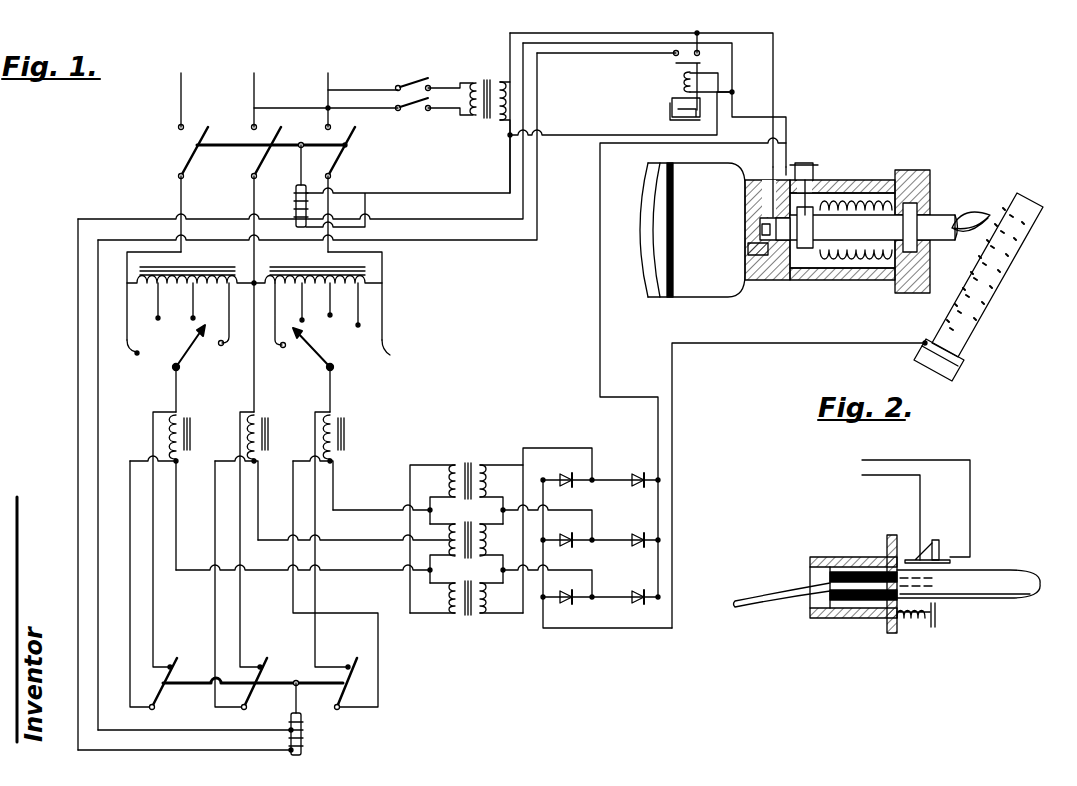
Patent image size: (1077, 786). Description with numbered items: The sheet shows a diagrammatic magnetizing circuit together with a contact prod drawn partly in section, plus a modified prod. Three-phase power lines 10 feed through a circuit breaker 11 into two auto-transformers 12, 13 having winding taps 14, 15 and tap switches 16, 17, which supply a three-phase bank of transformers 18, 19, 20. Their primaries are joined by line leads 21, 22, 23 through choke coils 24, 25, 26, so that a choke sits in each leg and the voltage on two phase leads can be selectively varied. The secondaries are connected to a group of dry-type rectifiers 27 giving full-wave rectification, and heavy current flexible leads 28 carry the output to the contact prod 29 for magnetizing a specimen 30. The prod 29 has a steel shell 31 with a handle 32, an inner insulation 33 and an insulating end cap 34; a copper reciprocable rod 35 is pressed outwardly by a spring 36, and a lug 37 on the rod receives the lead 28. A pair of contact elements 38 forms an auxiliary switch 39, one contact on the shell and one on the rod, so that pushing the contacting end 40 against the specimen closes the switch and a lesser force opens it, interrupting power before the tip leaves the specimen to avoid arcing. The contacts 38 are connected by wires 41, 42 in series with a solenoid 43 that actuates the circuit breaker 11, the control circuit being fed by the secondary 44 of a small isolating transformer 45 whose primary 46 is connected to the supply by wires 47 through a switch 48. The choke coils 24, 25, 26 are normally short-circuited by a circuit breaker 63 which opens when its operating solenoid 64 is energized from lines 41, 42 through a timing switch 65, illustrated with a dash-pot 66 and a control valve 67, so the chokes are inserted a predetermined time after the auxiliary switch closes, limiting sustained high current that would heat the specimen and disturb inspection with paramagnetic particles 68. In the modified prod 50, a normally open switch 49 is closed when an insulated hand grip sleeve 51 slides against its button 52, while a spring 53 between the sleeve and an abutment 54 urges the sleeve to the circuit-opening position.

In FIG. 1, the three-phase power lines 10 is at (340, 70).
In FIG. 1, the circuit breaker 11 is at (338, 163).
In FIG. 1, the auto-transformer 12 is at (188, 281).
In FIG. 1, the auto-transformer 13 is at (316, 268).
In FIG. 1, the winding taps 14 is at (137, 355).
In FIG. 1, the winding taps 15 is at (390, 355).
In FIG. 1, the tap switch 16 is at (180, 370).
In FIG. 1, the tap switch 17 is at (335, 370).
In FIG. 1, the transformer 18 is at (447, 481).
In FIG. 1, the transformer 19 is at (447, 541).
In FIG. 1, the transformer 20 is at (447, 600).
In FIG. 1, the line lead 21 is at (380, 541).
In FIG. 1, the line lead 22 is at (372, 503).
In FIG. 1, the line lead 23 is at (378, 570).
In FIG. 1, the choke coil 24 is at (271, 430).
In FIG. 1, the choke coil 25 is at (192, 428).
In FIG. 1, the choke coil 26 is at (348, 427).
In FIG. 1, the rectifiers 27 is at (612, 480).
In FIG. 1, the flexible leads 28 is at (673, 380).
In FIG. 2, the flexible leads 28 is at (773, 592).
In FIG. 1, the contact prod 29 is at (872, 182).
In FIG. 1, the specimen 30 is at (970, 343).
In FIG. 1, the steel shell 31 is at (843, 282).
In FIG. 1, the handle 32 is at (705, 170).
In FIG. 1, the insulation 33 is at (840, 183).
In FIG. 1, the end cap 34 is at (921, 172).
In FIG. 1, the reciprocable rod 35 is at (940, 242).
In FIG. 1, the spring 36 is at (870, 282).
In FIG. 1, the lug 37 is at (807, 163).
In FIG. 1, the contact elements 38 is at (790, 282).
In FIG. 1, the auxiliary switch 39 is at (772, 282).
In FIG. 1, the contacting end 40 is at (985, 214).
In FIG. 1, the wire 41 is at (776, 53).
In FIG. 2, the wire 41 is at (972, 513).
In FIG. 1, the wire 42 is at (736, 78).
In FIG. 2, the wire 42 is at (922, 515).
In FIG. 1, the solenoid 43 is at (296, 206).
In FIG. 1, the secondary 44 is at (505, 118).
In FIG. 1, the isolating transformer 45 is at (478, 80).
In FIG. 1, the primary 46 is at (462, 112).
In FIG. 1, the wires 47 is at (446, 85).
In FIG. 1, the switch 48 is at (400, 85).
In FIG. 2, the normally open switch 49 is at (941, 548).
In FIG. 2, the contact prod 50 is at (980, 605).
In FIG. 2, the hand grip sleeve 51 is at (835, 557).
In FIG. 2, the button 52 is at (910, 537).
In FIG. 2, the spring 53 is at (915, 627).
In FIG. 2, the abutment 54 is at (938, 625).
In FIG. 1, the circuit breaker 63 is at (322, 709).
In FIG. 1, the operating solenoid 64 is at (306, 742).
In FIG. 1, the timing switch 65 is at (676, 76).
In FIG. 1, the dash-pot 66 is at (671, 113).
In FIG. 1, the control valve 67 is at (672, 101).
In FIG. 1, the paramagnetic particles 68 is at (1000, 280).